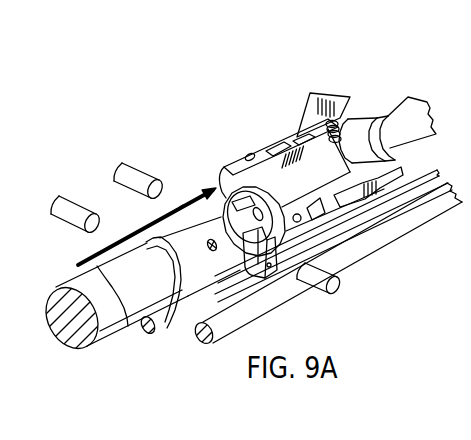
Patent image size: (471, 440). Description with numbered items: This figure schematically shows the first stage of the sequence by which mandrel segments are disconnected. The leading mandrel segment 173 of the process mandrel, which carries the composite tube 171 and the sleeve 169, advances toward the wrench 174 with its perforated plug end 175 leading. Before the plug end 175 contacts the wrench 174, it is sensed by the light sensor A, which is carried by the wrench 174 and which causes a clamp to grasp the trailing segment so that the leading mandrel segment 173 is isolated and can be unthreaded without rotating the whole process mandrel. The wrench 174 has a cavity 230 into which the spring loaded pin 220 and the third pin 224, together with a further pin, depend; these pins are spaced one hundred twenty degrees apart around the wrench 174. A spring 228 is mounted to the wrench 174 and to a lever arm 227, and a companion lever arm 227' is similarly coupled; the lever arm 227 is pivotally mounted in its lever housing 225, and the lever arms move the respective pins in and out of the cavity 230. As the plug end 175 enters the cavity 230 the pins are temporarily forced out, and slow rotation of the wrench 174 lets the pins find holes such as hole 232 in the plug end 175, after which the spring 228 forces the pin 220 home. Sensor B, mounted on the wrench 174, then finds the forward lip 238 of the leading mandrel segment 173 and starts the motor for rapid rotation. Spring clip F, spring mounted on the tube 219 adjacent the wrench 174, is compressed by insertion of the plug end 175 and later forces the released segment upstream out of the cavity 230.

The composite tube 171 is at (72, 280).
The sleeve 169 is at (135, 280).
The leading mandrel segment 173 is at (165, 303).
The forward lip 238 is at (174, 305).
The perforated plug end 175 is at (156, 222).
The light sensor A is at (64, 206).
The sensor B is at (140, 177).
The wrench 174 is at (235, 150).
The cavity 230 is at (228, 195).
The spring loaded pin 220 is at (250, 205).
The lever arm 227 is at (290, 115).
The lever housing 225 is at (311, 95).
The spring 228 is at (343, 118).
The lever arm 227' is at (340, 212).
The tube 219 is at (362, 224).
The third pin 224 is at (340, 265).
The hole 232 is at (258, 293).
The spring clip F is at (287, 288).